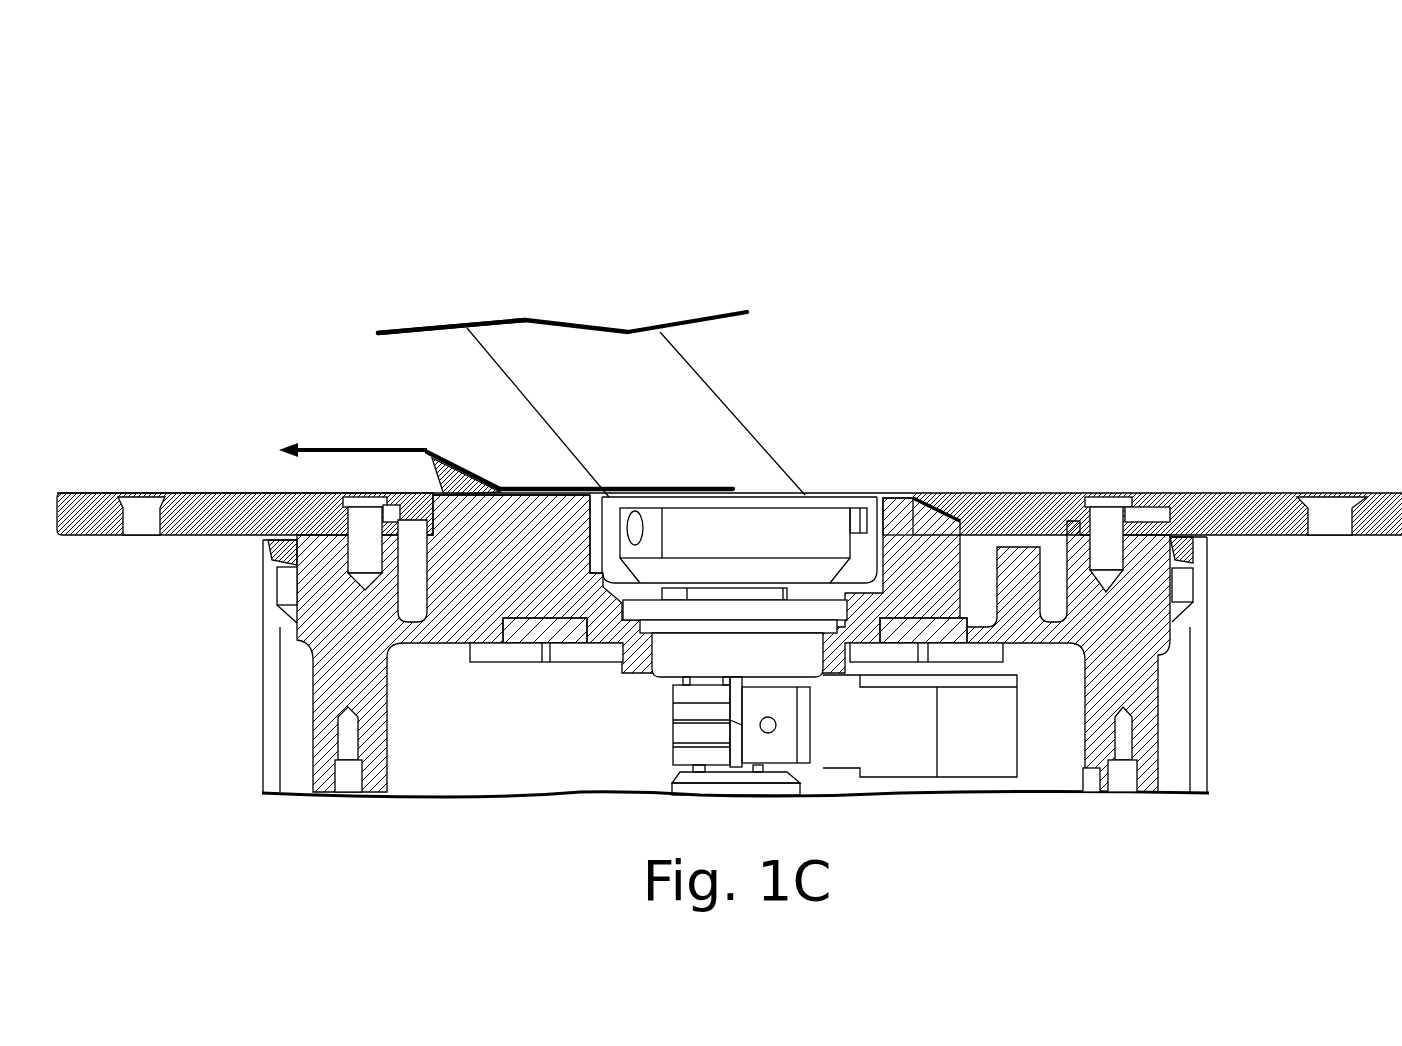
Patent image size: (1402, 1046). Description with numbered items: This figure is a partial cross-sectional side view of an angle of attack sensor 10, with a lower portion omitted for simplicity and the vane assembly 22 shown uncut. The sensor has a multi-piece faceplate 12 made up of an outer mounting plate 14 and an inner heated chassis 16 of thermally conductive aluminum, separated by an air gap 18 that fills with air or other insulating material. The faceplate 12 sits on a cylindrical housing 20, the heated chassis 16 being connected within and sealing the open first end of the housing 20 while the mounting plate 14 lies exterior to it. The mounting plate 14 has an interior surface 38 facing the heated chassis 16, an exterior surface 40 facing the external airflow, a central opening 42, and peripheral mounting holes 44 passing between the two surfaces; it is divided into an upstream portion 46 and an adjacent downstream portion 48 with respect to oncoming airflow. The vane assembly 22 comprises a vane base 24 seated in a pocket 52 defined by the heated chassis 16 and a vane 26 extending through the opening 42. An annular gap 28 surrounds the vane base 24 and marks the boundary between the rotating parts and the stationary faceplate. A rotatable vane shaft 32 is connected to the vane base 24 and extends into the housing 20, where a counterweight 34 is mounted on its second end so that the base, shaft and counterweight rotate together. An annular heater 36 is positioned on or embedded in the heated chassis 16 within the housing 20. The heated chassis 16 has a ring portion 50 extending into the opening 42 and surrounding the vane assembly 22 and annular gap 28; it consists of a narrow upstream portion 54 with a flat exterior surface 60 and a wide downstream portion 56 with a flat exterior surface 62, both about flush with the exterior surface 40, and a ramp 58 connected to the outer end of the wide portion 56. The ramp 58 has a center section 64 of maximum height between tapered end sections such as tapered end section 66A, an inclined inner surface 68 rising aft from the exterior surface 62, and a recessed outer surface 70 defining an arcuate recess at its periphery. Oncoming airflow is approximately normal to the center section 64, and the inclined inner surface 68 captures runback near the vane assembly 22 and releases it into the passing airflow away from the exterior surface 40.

The angle of attack sensor 10 is at (248, 172).
The faceplate 12 is at (1333, 442).
The mounting plate 14 is at (1385, 537).
The heated chassis 16 is at (352, 627).
The air gap 18 is at (1117, 793).
The housing 20 is at (270, 595).
The vane assembly 22 is at (413, 352).
The vane base 24 is at (828, 500).
The vane 26 is at (565, 340).
The annular gap 28 is at (578, 477).
The vane shaft 32 is at (707, 663).
The counterweight 34 is at (880, 740).
The heater 36 is at (535, 625).
The interior surface 38 is at (1150, 537).
The exterior surface 40 is at (1170, 493).
The opening 42 is at (443, 493).
The mounting holes 44 is at (145, 523).
The upstream portion 46 is at (1378, 493).
The downstream portion 48 is at (88, 493).
The ring portion 50 is at (883, 482).
The pocket 52 is at (602, 552).
The narrow portion 54 is at (910, 500).
The wide portion 56 is at (552, 495).
The ramp 58 is at (445, 451).
The exterior surface 60 is at (895, 500).
The exterior surface 62 is at (528, 497).
The center section 64 is at (519, 470).
The tapered end section 66A is at (600, 490).
The inclined inner surface 68 is at (505, 468).
The recessed outer surface 70 is at (430, 458).